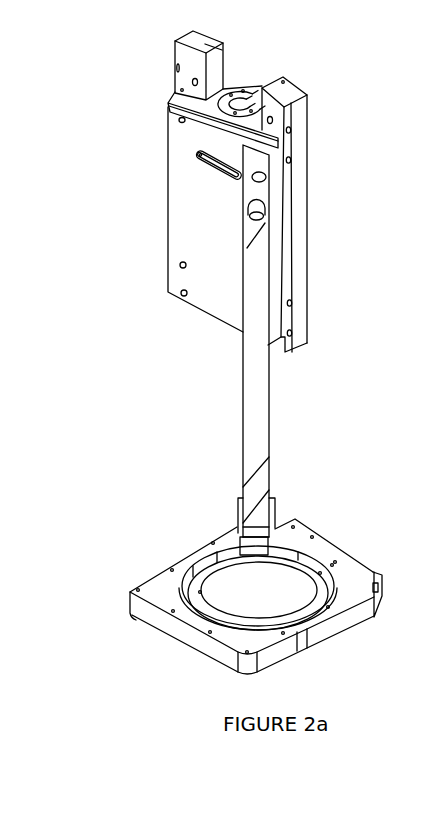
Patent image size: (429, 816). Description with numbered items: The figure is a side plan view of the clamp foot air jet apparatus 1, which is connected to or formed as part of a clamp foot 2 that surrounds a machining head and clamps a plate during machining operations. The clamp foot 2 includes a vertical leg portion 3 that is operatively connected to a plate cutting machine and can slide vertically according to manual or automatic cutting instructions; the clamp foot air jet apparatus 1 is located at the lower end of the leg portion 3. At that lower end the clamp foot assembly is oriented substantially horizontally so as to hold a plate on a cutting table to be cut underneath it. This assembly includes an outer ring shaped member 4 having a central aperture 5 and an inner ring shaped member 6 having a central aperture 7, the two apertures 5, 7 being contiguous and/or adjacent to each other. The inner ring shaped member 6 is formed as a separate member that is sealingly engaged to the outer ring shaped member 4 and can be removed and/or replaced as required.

The clamp foot air jet apparatus 1 is at (219, 360).
The clamp foot 2 is at (142, 373).
The vertical leg portion 3 is at (265, 418).
The outer ring shaped member 4 is at (248, 601).
The central aperture 5 is at (214, 625).
The inner ring shaped member 6 is at (244, 601).
The central aperture 7 is at (233, 597).